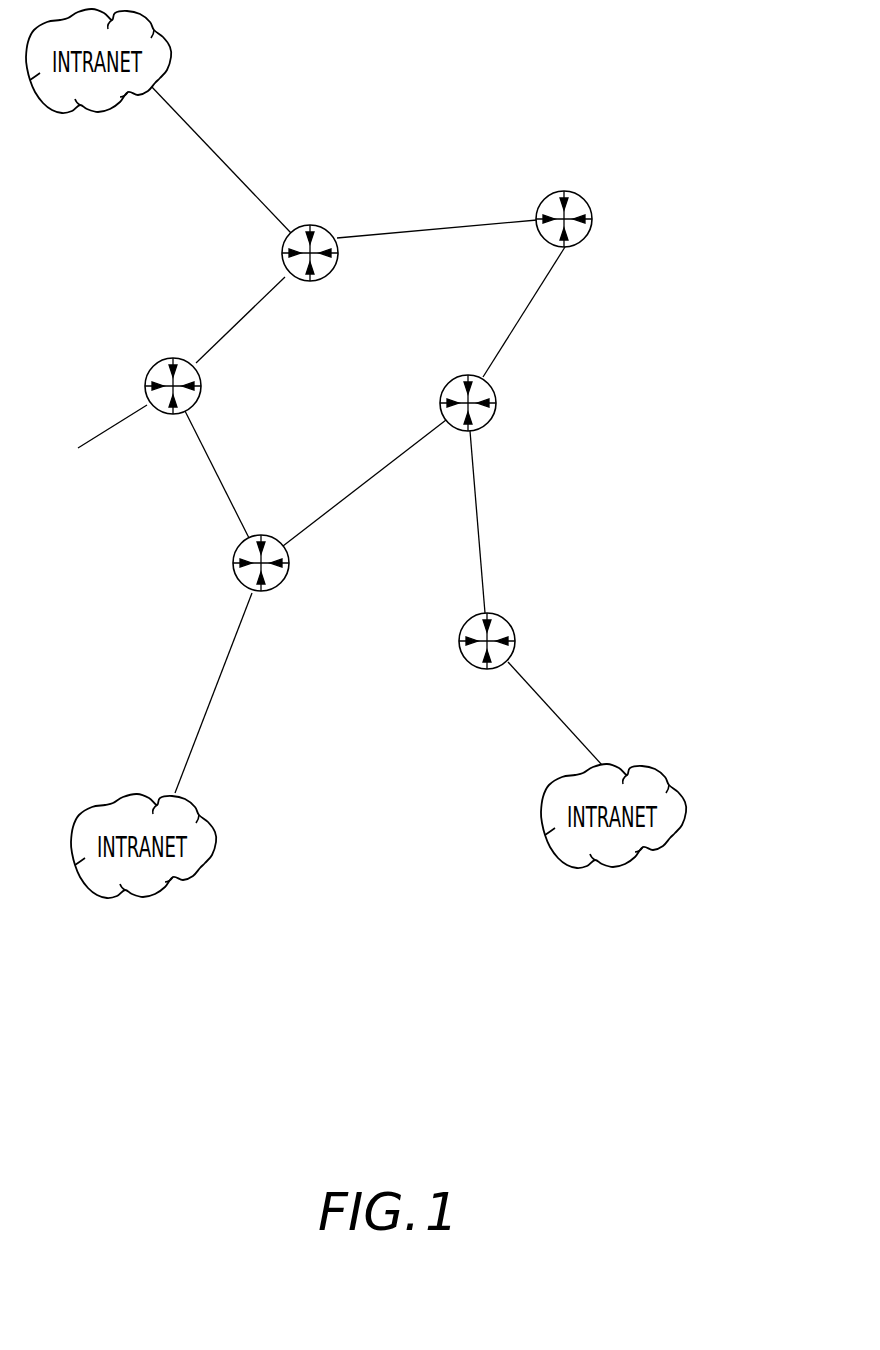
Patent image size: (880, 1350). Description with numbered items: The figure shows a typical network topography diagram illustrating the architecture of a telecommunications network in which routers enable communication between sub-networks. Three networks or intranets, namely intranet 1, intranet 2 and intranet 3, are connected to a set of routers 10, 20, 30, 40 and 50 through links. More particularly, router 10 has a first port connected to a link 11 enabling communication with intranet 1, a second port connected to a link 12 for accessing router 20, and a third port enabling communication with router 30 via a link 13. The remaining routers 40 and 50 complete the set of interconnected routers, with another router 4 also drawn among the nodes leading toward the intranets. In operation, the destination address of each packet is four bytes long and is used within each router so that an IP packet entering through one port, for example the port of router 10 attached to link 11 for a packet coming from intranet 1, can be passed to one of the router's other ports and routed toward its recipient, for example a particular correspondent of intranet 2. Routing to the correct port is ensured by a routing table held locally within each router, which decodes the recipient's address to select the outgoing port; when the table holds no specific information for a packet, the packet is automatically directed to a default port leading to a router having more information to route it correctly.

The intranet 1 is at (168, 42).
The intranet 2 is at (217, 832).
The intranet 3 is at (688, 805).
The router node 4 is at (507, 620).
The router 10 is at (328, 278).
The link 11 is at (220, 155).
The link 12 is at (433, 228).
The link 13 is at (242, 322).
The router 20 is at (587, 237).
The router 30 is at (198, 407).
The router 40 is at (494, 418).
The router 50 is at (285, 585).